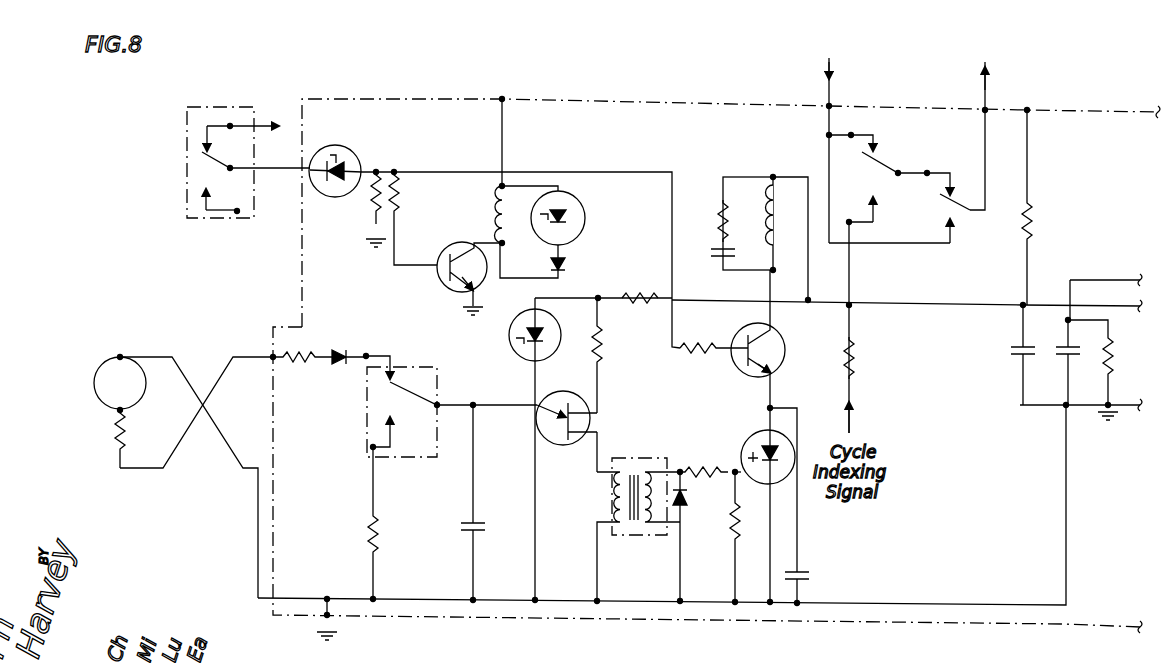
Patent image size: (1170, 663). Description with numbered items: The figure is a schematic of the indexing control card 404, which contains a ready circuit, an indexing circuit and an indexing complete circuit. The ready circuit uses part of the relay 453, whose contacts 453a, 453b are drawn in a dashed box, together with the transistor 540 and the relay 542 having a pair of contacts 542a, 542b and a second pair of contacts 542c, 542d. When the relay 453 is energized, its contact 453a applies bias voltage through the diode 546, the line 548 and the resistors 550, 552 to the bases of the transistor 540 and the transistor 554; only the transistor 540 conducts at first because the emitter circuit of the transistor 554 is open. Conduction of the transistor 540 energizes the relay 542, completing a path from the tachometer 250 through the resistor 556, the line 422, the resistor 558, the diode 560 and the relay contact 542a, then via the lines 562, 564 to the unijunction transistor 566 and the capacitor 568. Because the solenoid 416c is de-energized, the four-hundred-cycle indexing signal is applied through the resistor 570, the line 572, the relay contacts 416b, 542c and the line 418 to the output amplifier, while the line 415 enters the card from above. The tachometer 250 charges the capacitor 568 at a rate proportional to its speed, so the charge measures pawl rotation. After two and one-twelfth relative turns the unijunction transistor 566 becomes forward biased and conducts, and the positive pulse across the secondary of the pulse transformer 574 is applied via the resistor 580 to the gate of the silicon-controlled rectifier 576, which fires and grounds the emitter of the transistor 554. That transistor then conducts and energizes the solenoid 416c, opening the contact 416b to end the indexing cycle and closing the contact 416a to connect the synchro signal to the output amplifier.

The indexing control card 404 is at (396, 100).
The line 422 is at (262, 356).
The relay 453 is at (182, 113).
The relay contact 453a is at (220, 128).
The switch contact 453b is at (213, 216).
The diode 546 is at (350, 158).
The line 548 is at (394, 170).
The resistor 550 is at (401, 207).
The transistor 540 is at (440, 282).
The relay 542 is at (492, 198).
The relay contact 542a is at (392, 365).
The relay contact 542b is at (413, 445).
The relay contact 542c is at (950, 186).
The relay contact 542d is at (956, 240).
The line 564 is at (474, 456).
The capacitor 568 is at (475, 528).
The resistor 558 is at (302, 352).
The diode 560 is at (346, 351).
The tachometer 250 is at (94, 383).
The resistor 556 is at (126, 446).
The line 562 is at (523, 398).
The unijunction transistor 566 is at (540, 450).
The pulse transformer 574 is at (674, 456).
The resistor 580 is at (708, 465).
The silicon-controlled rectifier 576 is at (756, 434).
The resistor 552 is at (686, 362).
The transistor 554 is at (782, 346).
The relay contact 416a is at (872, 141).
The relay contact 416b is at (878, 214).
The solenoid 416c is at (756, 225).
The conductor 415 is at (827, 94).
The line 418 is at (987, 88).
The line 572 is at (852, 327).
The resistor 570 is at (856, 356).